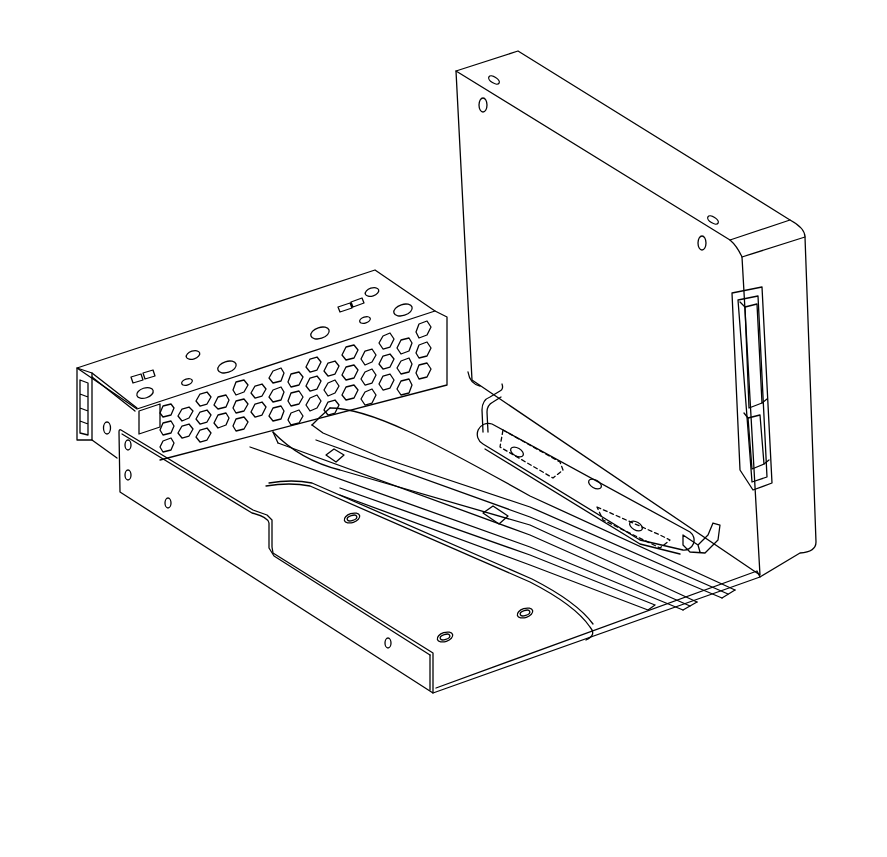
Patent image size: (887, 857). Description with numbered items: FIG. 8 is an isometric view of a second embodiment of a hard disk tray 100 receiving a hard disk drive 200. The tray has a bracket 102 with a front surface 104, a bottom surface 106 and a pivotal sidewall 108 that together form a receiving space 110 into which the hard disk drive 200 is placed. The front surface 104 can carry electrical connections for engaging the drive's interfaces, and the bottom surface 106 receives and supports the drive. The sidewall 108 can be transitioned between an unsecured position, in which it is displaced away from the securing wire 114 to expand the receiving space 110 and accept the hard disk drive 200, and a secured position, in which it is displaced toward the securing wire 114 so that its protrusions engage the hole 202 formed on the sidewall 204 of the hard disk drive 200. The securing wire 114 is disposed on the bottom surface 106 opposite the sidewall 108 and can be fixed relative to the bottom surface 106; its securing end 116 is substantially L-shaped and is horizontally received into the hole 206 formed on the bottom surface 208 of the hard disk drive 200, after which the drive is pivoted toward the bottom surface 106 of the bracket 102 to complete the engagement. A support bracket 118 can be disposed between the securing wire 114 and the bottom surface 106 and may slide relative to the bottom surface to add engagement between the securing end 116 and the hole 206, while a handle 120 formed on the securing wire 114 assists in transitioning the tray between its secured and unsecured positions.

The hard drive tray 100 is at (170, 87).
The bracket 102 is at (110, 463).
The front surface 104 is at (115, 365).
The bottom surface 106 is at (623, 617).
The sidewall 108 is at (257, 563).
The receiving space 110 is at (392, 575).
The securing wire 114 is at (543, 450).
The securing end 116 is at (720, 527).
The support bracket 118 is at (502, 445).
The handle 120 is at (570, 507).
The hard disk drive 200 is at (693, 182).
The hole 202 is at (493, 75).
The sidewall 204 is at (533, 78).
The hole 206 is at (472, 380).
The bottom surface 208 is at (468, 135).